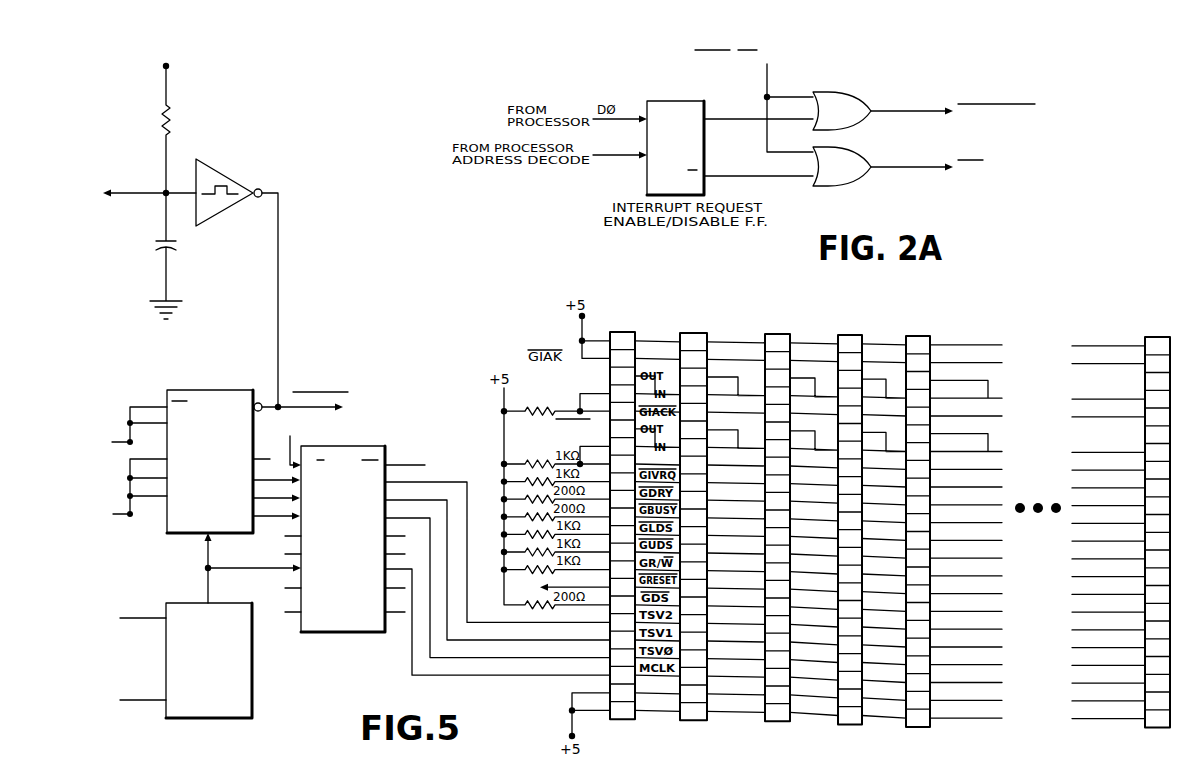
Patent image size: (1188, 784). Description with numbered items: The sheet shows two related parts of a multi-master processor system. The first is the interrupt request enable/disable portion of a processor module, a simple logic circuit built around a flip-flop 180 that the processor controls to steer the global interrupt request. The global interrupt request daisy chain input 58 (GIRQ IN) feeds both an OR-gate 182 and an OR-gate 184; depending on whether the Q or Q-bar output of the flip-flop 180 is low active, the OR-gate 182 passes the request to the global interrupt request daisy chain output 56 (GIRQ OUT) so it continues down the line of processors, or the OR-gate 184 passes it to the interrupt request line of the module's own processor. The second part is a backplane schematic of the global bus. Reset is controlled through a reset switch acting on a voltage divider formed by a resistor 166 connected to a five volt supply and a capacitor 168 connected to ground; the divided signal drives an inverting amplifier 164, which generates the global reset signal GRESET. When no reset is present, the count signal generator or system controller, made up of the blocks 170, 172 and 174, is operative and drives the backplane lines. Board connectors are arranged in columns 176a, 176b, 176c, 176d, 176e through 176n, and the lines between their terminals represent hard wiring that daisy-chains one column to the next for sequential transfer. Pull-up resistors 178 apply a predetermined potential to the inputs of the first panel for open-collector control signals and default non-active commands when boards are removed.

In FIG. 2A, the global interrupt request daisy chain output 56 is at (898, 111).
In FIG. 2A, the global interrupt request daisy chain input 58 is at (767, 66).
In FIG. 5, the inverting amplifier 164 is at (230, 179).
In FIG. 5, the resistor 166 is at (171, 113).
In FIG. 5, the capacitor 168 is at (171, 248).
In FIG. 5, the count signal generator block 170 is at (200, 390).
In FIG. 5, the count signal generator block 172 is at (217, 604).
In FIG. 5, the count signal generator block 174 is at (356, 446).
In FIG. 5, the board connector 176a is at (628, 327).
In FIG. 5, the board connector 176b is at (696, 327).
In FIG. 5, the board connector 176c is at (778, 334).
In FIG. 5, the board connector 176d is at (850, 335).
In FIG. 5, the board connector 176e is at (919, 336).
In FIG. 5, the board connector 176n is at (1156, 337).
In FIG. 5, the resistor 178 is at (552, 401).
In FIG. 2A, the flip-flop 180 is at (665, 101).
In FIG. 2A, the OR-gate 182 is at (852, 93).
In FIG. 2A, the OR-gate 184 is at (853, 148).